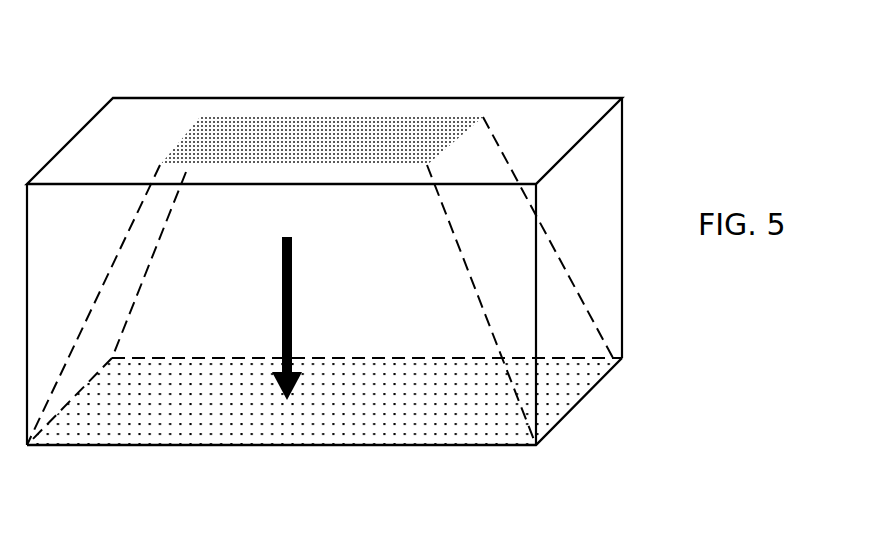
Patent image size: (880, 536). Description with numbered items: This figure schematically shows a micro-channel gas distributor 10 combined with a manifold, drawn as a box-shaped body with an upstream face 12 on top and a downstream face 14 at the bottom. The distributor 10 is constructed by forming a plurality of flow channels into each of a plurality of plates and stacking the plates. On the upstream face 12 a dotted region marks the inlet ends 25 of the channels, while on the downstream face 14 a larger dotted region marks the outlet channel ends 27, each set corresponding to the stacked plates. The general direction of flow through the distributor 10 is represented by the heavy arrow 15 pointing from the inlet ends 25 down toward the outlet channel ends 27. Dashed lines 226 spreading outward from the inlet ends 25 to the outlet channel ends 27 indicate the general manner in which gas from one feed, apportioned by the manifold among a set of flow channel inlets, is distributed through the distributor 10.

The micro-channel gas distributor 10 is at (686, 185).
The upstream face 12 is at (538, 117).
The downstream face 14 is at (285, 447).
The arrow 15 is at (195, 326).
The inlet ends 25 is at (237, 115).
The outlet channel ends 27 is at (565, 380).
The lines 226 is at (592, 322).